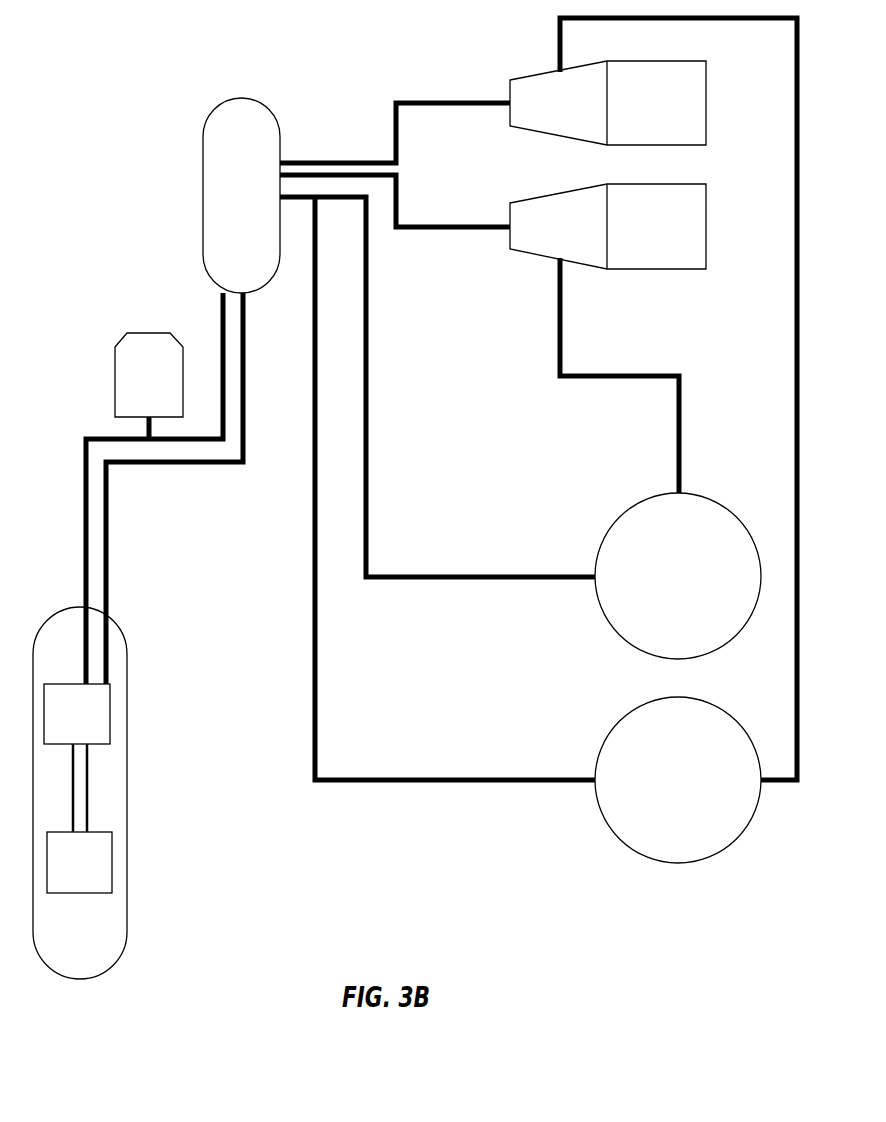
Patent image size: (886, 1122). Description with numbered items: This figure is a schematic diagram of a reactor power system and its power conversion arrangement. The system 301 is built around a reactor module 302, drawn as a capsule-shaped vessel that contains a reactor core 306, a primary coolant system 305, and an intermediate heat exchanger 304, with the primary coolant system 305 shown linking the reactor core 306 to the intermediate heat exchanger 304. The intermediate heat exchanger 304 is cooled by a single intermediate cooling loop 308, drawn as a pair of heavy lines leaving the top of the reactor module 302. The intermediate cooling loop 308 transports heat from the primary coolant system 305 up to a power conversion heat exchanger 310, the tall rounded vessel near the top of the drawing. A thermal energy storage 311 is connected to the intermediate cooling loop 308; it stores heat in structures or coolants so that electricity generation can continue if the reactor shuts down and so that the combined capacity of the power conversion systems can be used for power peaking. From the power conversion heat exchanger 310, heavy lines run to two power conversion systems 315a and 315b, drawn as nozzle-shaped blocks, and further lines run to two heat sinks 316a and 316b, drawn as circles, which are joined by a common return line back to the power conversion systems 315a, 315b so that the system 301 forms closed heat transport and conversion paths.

The system 301 is at (108, 157).
The reactor module 302 is at (127, 662).
The intermediate heat exchanger 304 is at (77, 714).
The primary coolant system 305 is at (90, 805).
The reactor core 306 is at (79, 862).
The intermediate cooling loop 308 is at (170, 465).
The power conversion heat exchanger 310 is at (208, 112).
The thermal energy storage 311 is at (148, 333).
The power conversion system 315a is at (733, 82).
The power conversion system 315b is at (733, 202).
The heat sink 316a is at (707, 494).
The heat sink 316b is at (707, 698).